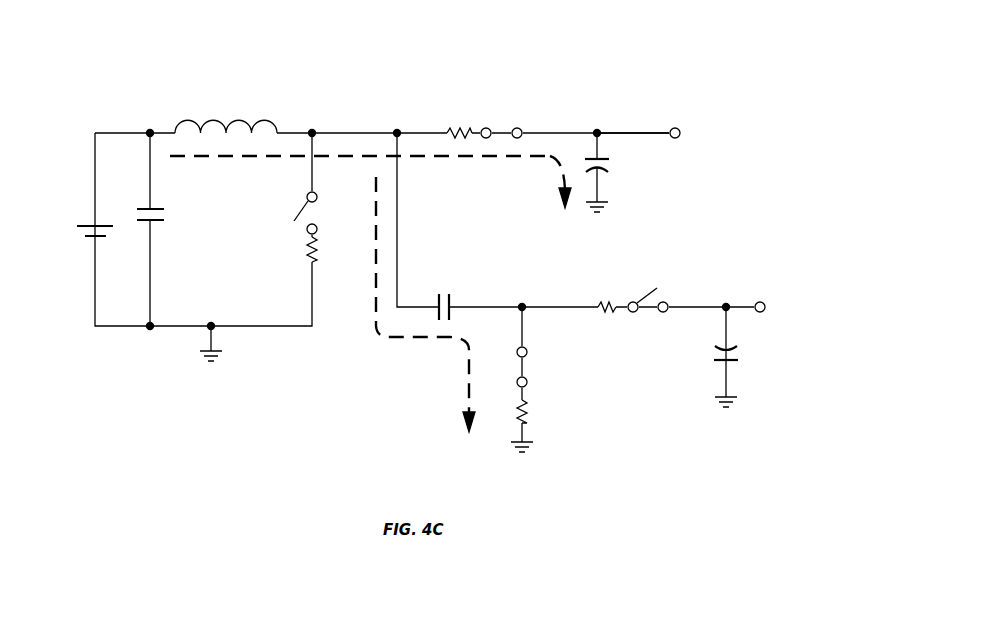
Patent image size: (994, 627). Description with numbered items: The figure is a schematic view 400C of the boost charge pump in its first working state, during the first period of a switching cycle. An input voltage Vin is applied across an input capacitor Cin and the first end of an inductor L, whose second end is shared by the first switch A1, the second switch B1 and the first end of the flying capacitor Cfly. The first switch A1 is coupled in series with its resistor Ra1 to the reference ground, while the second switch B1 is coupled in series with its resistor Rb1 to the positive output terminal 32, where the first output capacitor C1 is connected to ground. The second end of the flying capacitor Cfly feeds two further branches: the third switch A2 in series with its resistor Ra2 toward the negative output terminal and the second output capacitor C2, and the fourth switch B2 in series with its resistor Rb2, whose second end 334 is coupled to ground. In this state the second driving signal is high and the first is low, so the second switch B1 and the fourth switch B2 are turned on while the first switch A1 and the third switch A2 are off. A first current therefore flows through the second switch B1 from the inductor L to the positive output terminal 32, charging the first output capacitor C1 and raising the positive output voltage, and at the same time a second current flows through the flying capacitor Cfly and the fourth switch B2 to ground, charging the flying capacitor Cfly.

The positive output terminal 32 is at (634, 133).
The second end of the fourth switch 334 is at (524, 427).
The schematic view of the boost charge pump first working state 400C is at (752, 105).
The inductor L is at (226, 111).
The input voltage source Vin is at (85, 215).
The input capacitor Cin is at (158, 207).
The first switch A1 is at (289, 213).
The resistor Ra1 is at (292, 252).
The resistor Rb1 is at (455, 121).
The second switch B1 is at (503, 116).
The first output capacitor C1 is at (611, 185).
The flying capacitor Cfly is at (462, 314).
The fourth switch B2 is at (503, 367).
The resistor Rb2 is at (502, 411).
The resistor Ra2 is at (601, 292).
The third switch A2 is at (648, 290).
The second output capacitor C2 is at (707, 376).